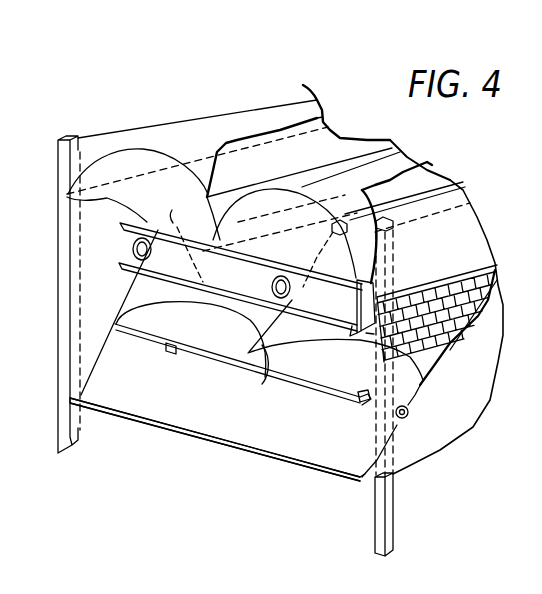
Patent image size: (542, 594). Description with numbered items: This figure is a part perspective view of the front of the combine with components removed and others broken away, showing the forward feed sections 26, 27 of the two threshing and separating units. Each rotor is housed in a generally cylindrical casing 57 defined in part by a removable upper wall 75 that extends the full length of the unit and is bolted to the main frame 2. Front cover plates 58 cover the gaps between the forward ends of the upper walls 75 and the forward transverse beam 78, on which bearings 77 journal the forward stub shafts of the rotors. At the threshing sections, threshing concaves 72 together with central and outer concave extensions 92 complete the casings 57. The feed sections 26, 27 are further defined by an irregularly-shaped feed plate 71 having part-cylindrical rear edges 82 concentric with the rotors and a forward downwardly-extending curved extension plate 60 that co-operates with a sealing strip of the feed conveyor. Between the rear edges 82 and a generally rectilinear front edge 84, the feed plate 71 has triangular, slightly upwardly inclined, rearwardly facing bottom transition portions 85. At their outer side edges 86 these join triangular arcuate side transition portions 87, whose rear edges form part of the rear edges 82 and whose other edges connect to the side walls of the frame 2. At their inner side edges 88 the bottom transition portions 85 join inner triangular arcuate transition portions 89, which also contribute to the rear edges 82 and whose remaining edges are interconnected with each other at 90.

The main frame 2 is at (58, 392).
The feed section 26 is at (138, 434).
The feed section 27 is at (215, 444).
The casing 57 is at (238, 100).
The front cover plate 58 is at (100, 158).
The curved extension plate 60 is at (333, 473).
The feed plate 71 is at (441, 434).
The threshing concave 72 is at (453, 280).
The upper wall 75 is at (190, 132).
The bearing 77 is at (131, 240).
The forward transverse beam 78 is at (242, 240).
The rear edge 82 is at (175, 215).
The front edge 84 is at (409, 413).
The bottom transition portion 85 is at (197, 342).
The outer side edge 86 is at (140, 326).
The side transition portion 87 is at (138, 292).
The inner side edge 88 is at (255, 336).
The inner transition portion 89 is at (263, 373).
The interconnection of inner transition portions 90 is at (312, 291).
The concave extension 92 is at (435, 193).